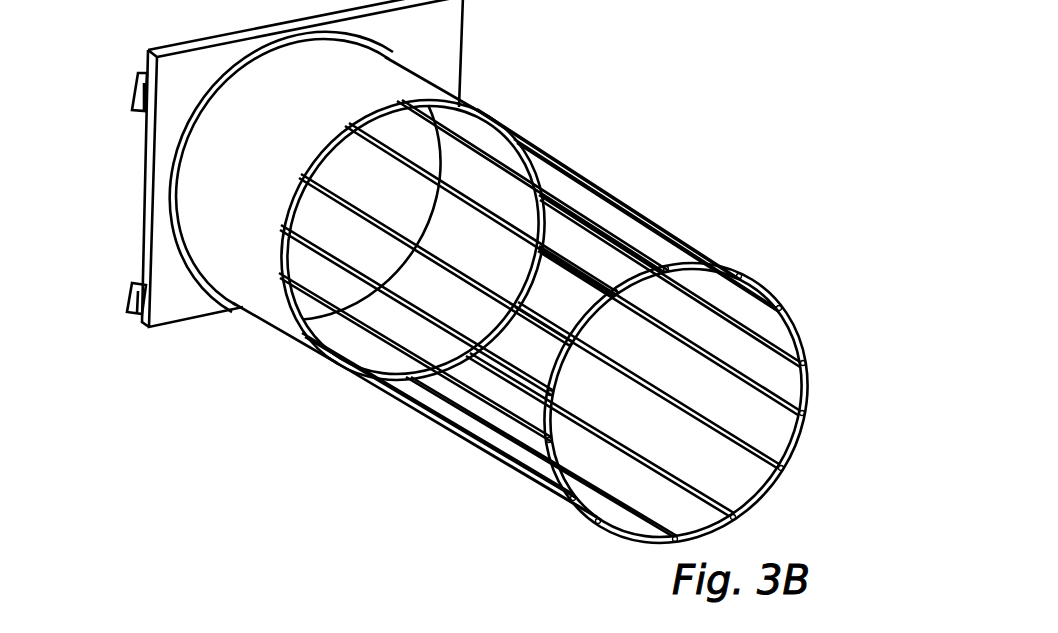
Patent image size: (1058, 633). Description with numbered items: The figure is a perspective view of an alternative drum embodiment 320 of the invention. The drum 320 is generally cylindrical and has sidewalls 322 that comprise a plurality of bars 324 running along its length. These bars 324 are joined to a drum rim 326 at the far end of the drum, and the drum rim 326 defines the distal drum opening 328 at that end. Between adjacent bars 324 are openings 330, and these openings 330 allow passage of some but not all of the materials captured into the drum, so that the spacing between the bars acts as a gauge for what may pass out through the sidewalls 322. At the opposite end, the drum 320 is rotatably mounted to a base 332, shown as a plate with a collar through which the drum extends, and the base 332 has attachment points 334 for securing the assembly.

The drum 320 is at (588, 326).
The sidewalls 322 is at (373, 90).
The bars 324 is at (642, 213).
The drum rim 326 is at (763, 288).
The distal drum opening 328 is at (777, 377).
The openings 330 is at (753, 425).
The base 332 is at (170, 300).
The attachment points 334 is at (120, 297).